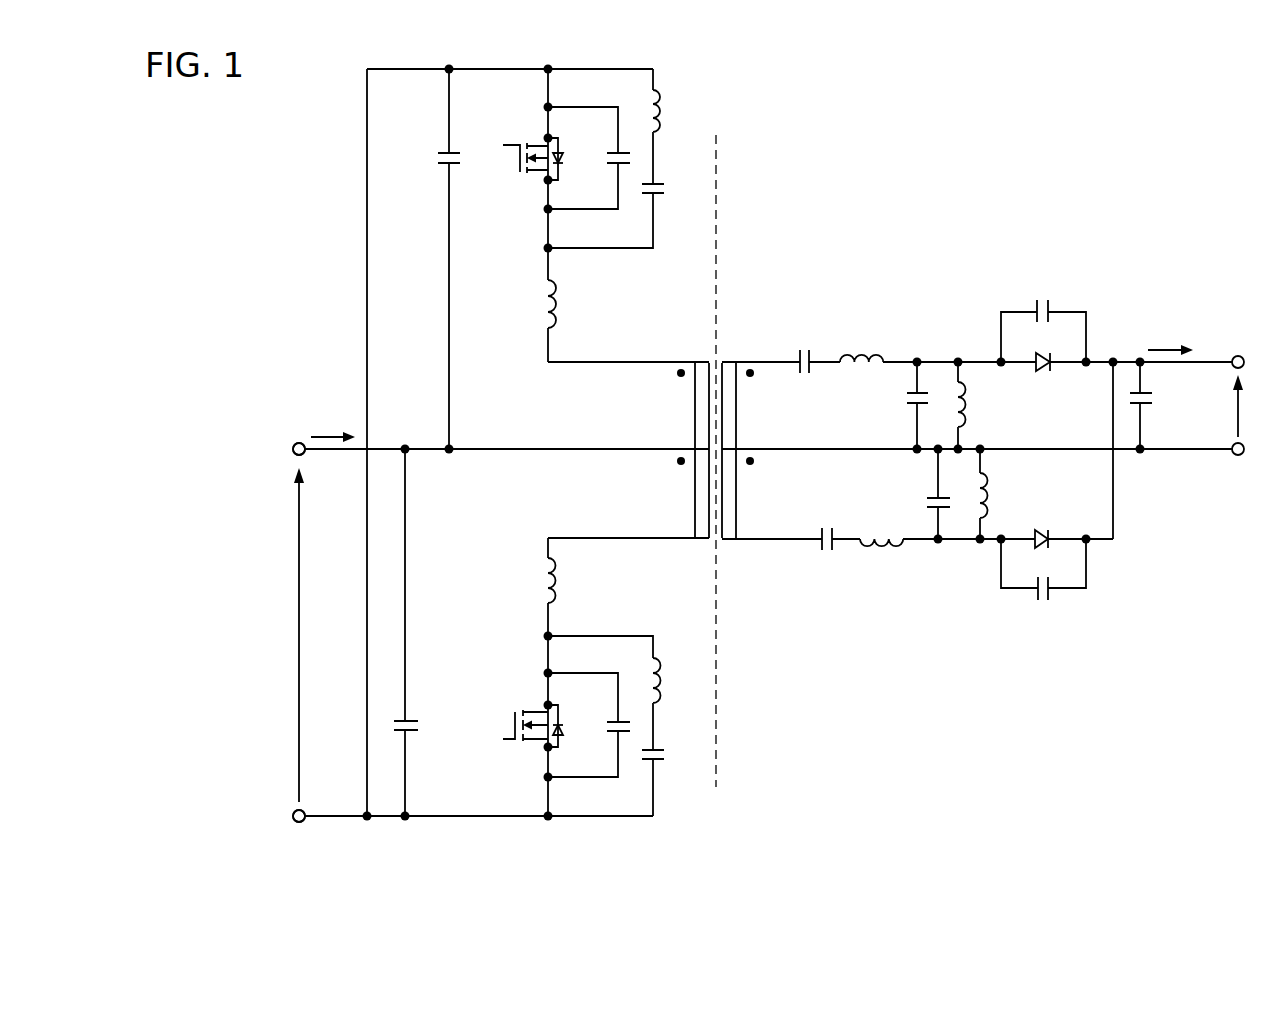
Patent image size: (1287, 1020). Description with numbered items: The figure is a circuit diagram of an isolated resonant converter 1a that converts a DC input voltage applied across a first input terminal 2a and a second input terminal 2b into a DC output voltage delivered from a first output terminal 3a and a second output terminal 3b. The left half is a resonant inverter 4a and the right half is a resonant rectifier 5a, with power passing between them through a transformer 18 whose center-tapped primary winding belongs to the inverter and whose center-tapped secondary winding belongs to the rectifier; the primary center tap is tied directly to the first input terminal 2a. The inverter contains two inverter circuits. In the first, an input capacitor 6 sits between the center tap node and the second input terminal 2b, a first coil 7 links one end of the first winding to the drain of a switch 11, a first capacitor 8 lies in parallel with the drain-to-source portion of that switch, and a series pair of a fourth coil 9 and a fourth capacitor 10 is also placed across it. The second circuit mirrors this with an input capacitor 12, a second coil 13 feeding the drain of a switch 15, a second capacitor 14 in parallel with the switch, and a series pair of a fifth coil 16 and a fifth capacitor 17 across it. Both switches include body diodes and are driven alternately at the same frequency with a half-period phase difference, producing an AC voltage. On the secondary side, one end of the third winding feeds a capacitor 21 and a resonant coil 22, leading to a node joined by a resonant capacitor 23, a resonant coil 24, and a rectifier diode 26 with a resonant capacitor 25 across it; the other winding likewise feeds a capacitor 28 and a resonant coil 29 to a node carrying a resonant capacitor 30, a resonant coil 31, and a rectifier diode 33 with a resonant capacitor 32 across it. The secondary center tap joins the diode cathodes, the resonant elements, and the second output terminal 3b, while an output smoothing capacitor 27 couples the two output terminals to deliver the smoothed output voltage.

The resonant converter 1a is at (1140, 108).
The first input terminal 2a is at (293, 450).
The second input terminal 2b is at (293, 817).
The first output terminal 3a is at (1242, 354).
The second output terminal 3b is at (1242, 457).
The resonant inverter 4a is at (252, 192).
The resonant rectifier 5a is at (988, 196).
The input capacitor 6 is at (418, 725).
The first coil 7 is at (563, 580).
The first capacitor 8 is at (628, 719).
The fourth coil 9 is at (667, 680).
The fourth capacitor 10 is at (664, 754).
The switch 11 is at (520, 711).
The input capacitor 12 is at (438, 158).
The second coil 13 is at (563, 303).
The second capacitor 14 is at (628, 150).
The switch 15 is at (519, 143).
The fifth coil 16 is at (667, 112).
The fifth capacitor 17 is at (664, 188).
The transformer 18 is at (686, 345).
The capacitor 21 is at (803, 347).
The resonant coil 22 is at (858, 346).
The resonant capacitor 23 is at (907, 398).
The resonant coil 24 is at (972, 405).
The resonant capacitor 25 is at (1043, 298).
The rectifier diode 26 is at (1047, 372).
The output smoothing capacitor 27 is at (1152, 398).
The capacitor 28 is at (826, 553).
The resonant coil 29 is at (882, 556).
The resonant capacitor 30 is at (927, 502).
The resonant coil 31 is at (994, 496).
The resonant capacitor 32 is at (1044, 603).
The rectifier diode 33 is at (1045, 529).